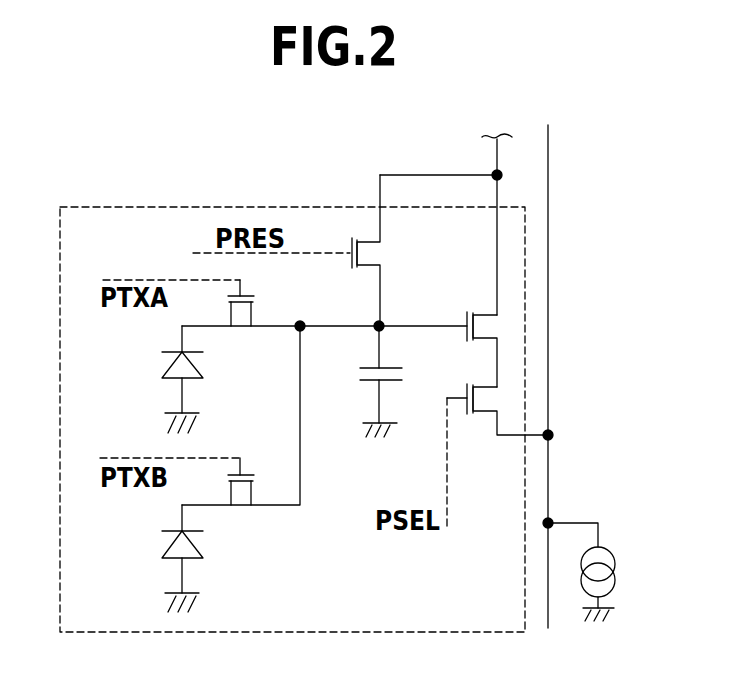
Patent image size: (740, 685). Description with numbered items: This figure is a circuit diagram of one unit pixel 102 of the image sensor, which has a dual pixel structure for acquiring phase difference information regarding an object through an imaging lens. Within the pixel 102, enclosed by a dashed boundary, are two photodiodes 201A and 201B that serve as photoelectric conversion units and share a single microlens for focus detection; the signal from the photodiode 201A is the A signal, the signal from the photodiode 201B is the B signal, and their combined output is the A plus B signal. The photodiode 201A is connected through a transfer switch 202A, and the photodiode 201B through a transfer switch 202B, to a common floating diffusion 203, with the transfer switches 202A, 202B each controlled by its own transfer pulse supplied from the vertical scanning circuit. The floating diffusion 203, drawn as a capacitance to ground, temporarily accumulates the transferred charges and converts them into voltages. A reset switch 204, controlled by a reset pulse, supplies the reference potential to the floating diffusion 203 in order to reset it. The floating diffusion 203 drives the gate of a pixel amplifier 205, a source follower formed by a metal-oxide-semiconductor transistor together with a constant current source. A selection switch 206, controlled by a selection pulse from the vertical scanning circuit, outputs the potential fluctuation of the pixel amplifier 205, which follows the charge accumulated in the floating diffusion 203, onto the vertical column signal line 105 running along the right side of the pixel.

The pixel 102 is at (153, 207).
The column signal line 105 is at (549, 216).
The photodiode 201A is at (170, 382).
The photodiode 201B is at (170, 562).
The transfer switch 202A is at (240, 329).
The transfer switch 202B is at (240, 508).
The floating diffusion 203 is at (370, 385).
The reset switch 204 is at (350, 257).
The pixel amplifier 205 is at (493, 325).
The selection switch 206 is at (493, 398).